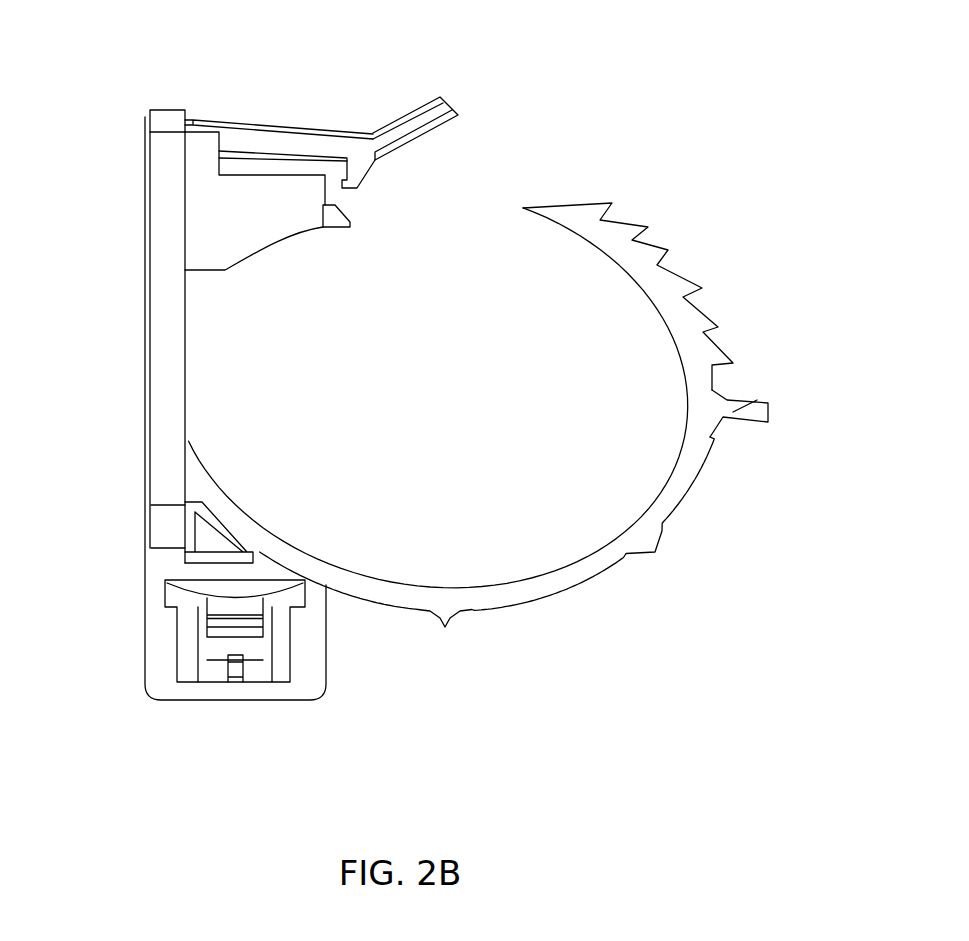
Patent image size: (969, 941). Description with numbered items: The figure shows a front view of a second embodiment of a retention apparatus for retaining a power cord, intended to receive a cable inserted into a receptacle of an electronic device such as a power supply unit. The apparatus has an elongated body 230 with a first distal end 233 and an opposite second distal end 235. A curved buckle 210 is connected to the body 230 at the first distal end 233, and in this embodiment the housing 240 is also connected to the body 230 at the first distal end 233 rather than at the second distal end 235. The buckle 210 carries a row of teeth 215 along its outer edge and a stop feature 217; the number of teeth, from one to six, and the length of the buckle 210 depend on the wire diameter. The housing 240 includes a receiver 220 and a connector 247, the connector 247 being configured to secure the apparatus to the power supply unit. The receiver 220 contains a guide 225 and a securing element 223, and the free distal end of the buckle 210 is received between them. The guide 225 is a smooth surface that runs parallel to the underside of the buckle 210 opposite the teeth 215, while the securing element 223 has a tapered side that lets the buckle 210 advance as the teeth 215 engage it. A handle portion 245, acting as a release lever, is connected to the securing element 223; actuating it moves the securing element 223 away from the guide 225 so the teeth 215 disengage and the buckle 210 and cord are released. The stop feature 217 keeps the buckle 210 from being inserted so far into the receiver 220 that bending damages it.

The buckle 210 is at (618, 552).
The teeth 215 is at (645, 257).
The stop feature 217 is at (770, 405).
The receiver 220 is at (212, 227).
The securing element 223 is at (358, 172).
The guide 225 is at (333, 221).
The body 230 is at (158, 363).
The first distal end 233 is at (163, 533).
The second distal end 235 is at (172, 115).
The housing 240 is at (300, 687).
The handle portion 245 is at (447, 97).
The connector 247 is at (210, 590).